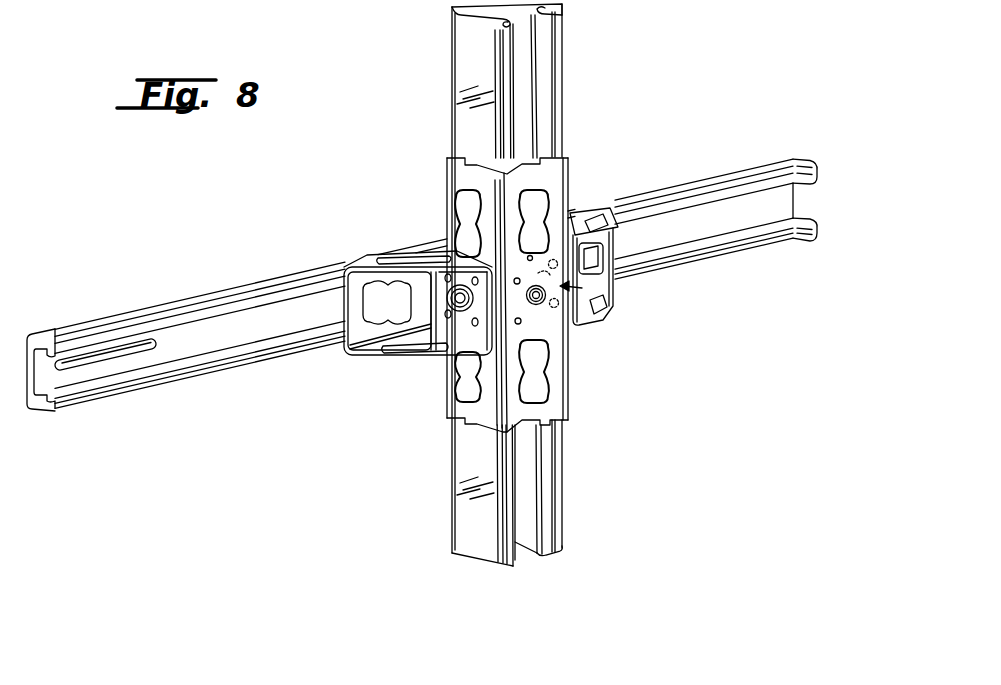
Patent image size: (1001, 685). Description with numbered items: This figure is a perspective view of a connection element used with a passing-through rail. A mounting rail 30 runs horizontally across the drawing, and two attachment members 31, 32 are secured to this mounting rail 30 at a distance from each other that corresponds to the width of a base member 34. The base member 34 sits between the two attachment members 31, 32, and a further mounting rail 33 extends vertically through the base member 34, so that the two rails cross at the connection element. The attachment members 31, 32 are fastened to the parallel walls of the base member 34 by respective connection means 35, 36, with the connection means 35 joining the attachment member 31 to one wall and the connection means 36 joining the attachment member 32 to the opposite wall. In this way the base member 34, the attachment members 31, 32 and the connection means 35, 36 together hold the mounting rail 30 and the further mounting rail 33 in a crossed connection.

The mounting rail 30 is at (222, 290).
The attachment member 31 is at (425, 255).
The attachment member 32 is at (583, 216).
The further mounting rail 33 is at (463, 73).
The base member 34 is at (563, 403).
The connection means 35 is at (461, 322).
The connection means 36 is at (600, 316).